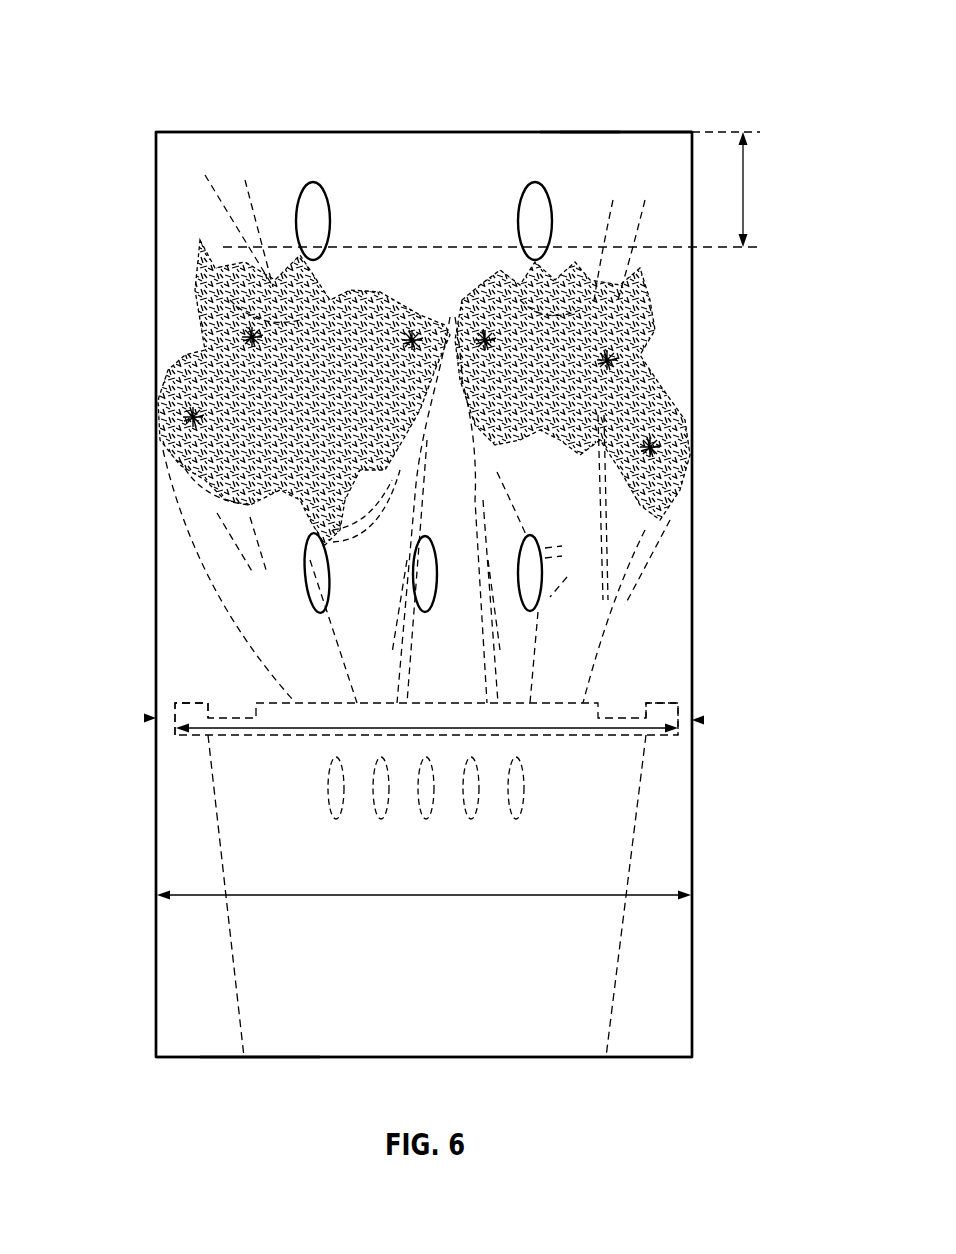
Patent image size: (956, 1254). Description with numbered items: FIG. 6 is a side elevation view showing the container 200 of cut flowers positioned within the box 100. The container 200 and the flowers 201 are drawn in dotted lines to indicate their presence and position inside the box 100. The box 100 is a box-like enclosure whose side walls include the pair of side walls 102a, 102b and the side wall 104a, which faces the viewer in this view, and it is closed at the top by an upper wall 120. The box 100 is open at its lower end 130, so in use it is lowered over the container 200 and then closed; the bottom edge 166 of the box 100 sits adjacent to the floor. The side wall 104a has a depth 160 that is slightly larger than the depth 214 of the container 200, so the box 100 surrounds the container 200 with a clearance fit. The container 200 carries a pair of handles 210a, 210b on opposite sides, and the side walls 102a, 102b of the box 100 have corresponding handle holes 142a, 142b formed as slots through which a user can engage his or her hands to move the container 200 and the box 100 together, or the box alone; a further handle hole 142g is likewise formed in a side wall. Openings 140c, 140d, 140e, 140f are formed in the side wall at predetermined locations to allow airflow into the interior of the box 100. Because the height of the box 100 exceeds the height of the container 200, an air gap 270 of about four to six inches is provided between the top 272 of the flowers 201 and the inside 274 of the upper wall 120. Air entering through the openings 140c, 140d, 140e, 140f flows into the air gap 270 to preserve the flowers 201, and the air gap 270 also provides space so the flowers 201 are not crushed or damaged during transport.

The box 100 is at (206, 72).
The side wall 104a is at (460, 155).
The upper wall 120 is at (613, 122).
The inside of the upper wall 274 is at (584, 146).
The air gap 270 is at (745, 190).
The top of the flowers 272 is at (701, 250).
The side wall 102a is at (156, 250).
The side wall 102b is at (692, 382).
The flowers 201 is at (163, 420).
The opening 140c is at (317, 205).
The opening 140d is at (530, 205).
The opening 140e is at (317, 600).
The opening 140f is at (428, 598).
The handle hole 142g is at (530, 598).
The handle 210a is at (195, 713).
The handle 210b is at (660, 713).
The handle hole 142a is at (146, 720).
The handle hole 142b is at (703, 723).
The depth 214 is at (200, 729).
The depth 160 is at (185, 897).
The container 200 is at (622, 915).
The bottom edge 166 is at (430, 1056).
The lower end 130 is at (256, 1070).